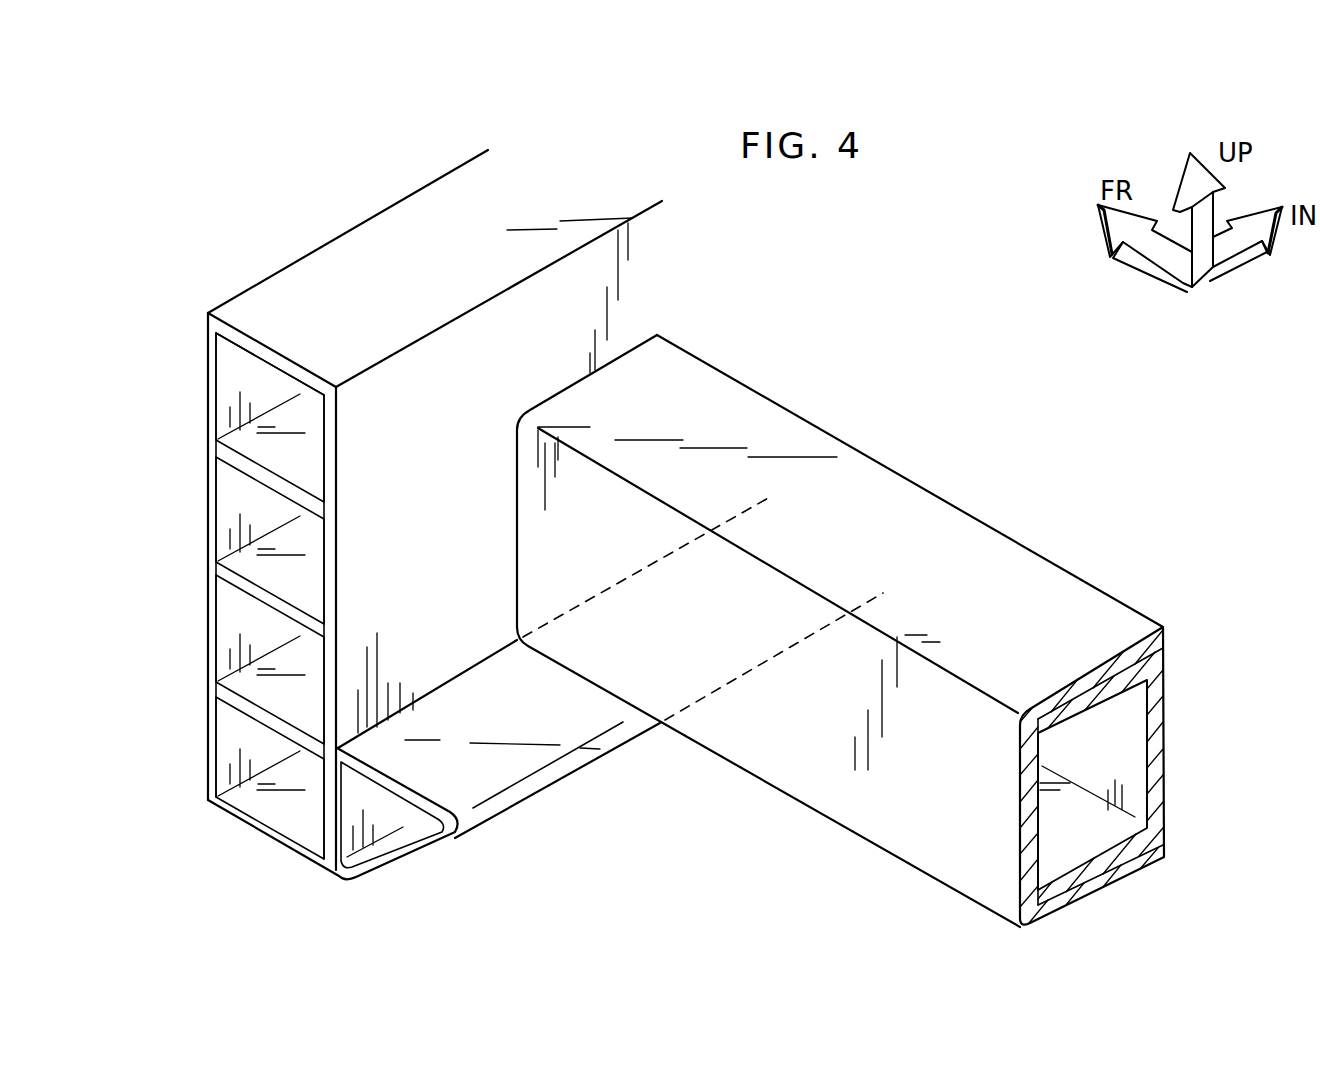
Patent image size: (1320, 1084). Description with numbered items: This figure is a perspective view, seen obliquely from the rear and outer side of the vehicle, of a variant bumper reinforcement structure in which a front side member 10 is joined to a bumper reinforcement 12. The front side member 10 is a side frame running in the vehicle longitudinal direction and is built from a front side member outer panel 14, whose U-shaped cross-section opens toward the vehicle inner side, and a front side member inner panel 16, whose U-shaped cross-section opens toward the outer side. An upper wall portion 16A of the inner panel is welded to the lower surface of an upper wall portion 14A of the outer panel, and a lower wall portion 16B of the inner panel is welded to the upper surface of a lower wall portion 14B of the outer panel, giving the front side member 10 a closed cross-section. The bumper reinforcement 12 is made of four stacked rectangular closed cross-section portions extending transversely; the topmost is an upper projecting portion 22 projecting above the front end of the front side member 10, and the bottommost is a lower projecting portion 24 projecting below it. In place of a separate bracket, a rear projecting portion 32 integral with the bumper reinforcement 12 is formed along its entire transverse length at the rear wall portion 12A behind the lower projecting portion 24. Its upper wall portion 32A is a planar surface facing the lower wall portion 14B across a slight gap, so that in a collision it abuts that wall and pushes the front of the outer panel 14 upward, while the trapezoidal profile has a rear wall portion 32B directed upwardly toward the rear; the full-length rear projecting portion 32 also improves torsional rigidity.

The front side member 10 is at (1225, 560).
The bumper reinforcement 12 is at (443, 510).
The rear wall portion 12A is at (452, 638).
The front side member outer panel 14 is at (1113, 634).
The upper wall portion 14A is at (1027, 588).
The lower wall portion 14B is at (1110, 890).
The front side member inner panel 16 is at (1167, 708).
The upper wall portion 16A is at (1105, 698).
The lower wall portion 16B is at (1085, 860).
The upper projecting portion 22 is at (205, 387).
The lower projecting portion 24 is at (205, 752).
The rear projecting portion 32 is at (520, 808).
The upper wall portion 32A is at (643, 683).
The rear wall portion 32B is at (427, 850).